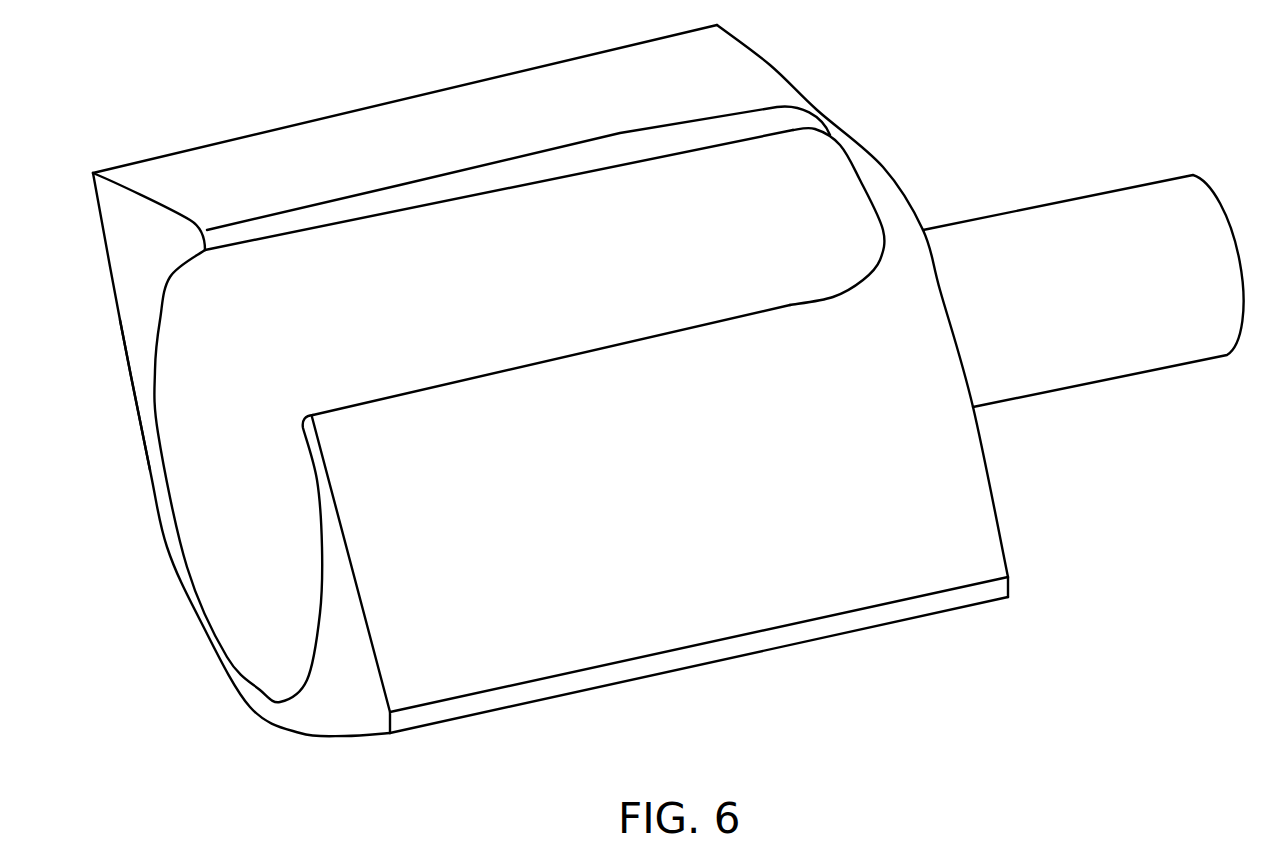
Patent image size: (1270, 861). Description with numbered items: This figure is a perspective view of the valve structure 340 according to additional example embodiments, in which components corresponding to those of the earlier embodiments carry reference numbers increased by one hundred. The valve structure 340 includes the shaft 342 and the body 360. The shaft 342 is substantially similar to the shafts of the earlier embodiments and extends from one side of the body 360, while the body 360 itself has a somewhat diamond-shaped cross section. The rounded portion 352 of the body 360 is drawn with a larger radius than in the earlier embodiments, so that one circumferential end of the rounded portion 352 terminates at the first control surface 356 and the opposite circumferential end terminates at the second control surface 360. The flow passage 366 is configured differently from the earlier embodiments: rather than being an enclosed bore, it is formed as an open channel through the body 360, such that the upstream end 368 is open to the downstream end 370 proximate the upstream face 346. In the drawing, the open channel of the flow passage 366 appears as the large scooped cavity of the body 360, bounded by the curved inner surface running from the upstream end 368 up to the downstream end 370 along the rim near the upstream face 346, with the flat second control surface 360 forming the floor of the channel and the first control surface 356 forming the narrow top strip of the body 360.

The valve structure 340 is at (1040, 127).
The shaft 342 is at (1056, 297).
The upstream face 346 is at (143, 242).
The rounded portion 352 is at (307, 735).
The first control surface 356 is at (429, 141).
The body 360 is at (635, 516).
The flow passage 366 is at (180, 448).
The upstream end 368 is at (258, 686).
The downstream end 370 is at (683, 128).